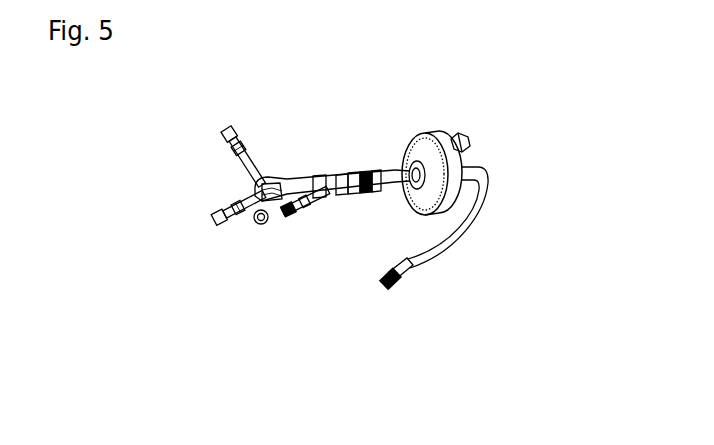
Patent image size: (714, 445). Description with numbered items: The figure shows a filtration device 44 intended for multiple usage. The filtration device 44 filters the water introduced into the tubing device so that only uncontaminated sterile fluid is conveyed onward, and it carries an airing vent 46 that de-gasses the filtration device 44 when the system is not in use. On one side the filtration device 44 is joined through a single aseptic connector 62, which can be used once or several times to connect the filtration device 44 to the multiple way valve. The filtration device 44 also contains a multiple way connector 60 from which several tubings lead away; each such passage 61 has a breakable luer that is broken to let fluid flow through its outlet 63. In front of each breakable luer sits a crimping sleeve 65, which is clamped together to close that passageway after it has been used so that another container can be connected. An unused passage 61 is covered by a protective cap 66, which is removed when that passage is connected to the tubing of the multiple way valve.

The filtration device 44 is at (443, 137).
The airing vent 46 is at (468, 142).
The multiple way connector 60 is at (338, 180).
The passage 61 is at (300, 178).
The single aseptic connector 62 is at (246, 202).
The outlet 63 is at (289, 217).
The crimping sleeve 65 is at (338, 200).
The protective cap 66 is at (258, 223).